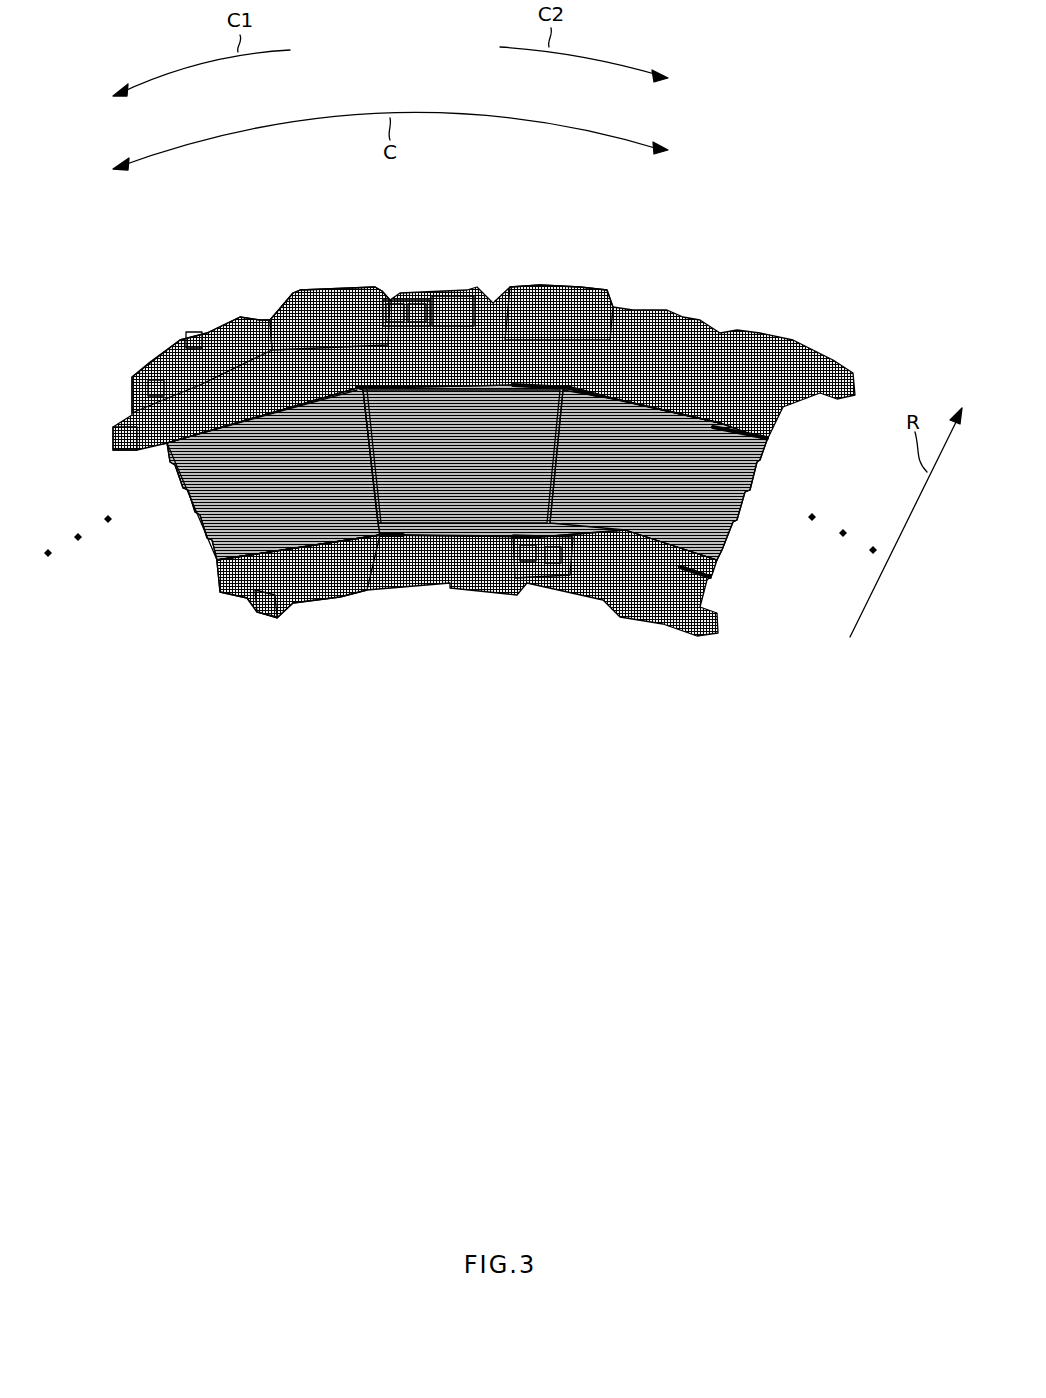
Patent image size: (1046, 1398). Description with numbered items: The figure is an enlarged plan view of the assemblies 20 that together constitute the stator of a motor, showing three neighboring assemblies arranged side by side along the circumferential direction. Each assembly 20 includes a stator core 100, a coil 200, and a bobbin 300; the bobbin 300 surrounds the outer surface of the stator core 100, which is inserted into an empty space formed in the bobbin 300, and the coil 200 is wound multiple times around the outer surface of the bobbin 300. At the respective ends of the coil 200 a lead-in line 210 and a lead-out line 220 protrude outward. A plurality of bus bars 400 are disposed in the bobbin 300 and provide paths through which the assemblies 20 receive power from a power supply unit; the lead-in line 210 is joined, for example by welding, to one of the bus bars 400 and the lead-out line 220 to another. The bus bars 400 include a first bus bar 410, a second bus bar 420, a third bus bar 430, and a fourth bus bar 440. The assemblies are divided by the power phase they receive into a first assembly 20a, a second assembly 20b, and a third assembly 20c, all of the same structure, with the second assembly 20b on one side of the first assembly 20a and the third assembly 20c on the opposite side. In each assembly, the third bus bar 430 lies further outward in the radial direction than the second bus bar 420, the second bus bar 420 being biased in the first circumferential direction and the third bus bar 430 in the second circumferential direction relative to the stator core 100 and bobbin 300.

The assembly 20 is at (461, 548).
The first assembly 20a is at (470, 612).
The second assembly 20b is at (632, 640).
The third assembly 20c is at (332, 636).
The stator core 100 is at (220, 575).
The coil 200 is at (205, 510).
The lead-in line 210 is at (180, 345).
The lead-out line 220 is at (255, 610).
The bobbin 300 is at (325, 305).
The bus bar 400 is at (484, 548).
The first bus bar 410 is at (538, 307).
The second bus bar 420 is at (387, 303).
The third bus bar 430 is at (442, 300).
The fourth bus bar 440 is at (535, 580).